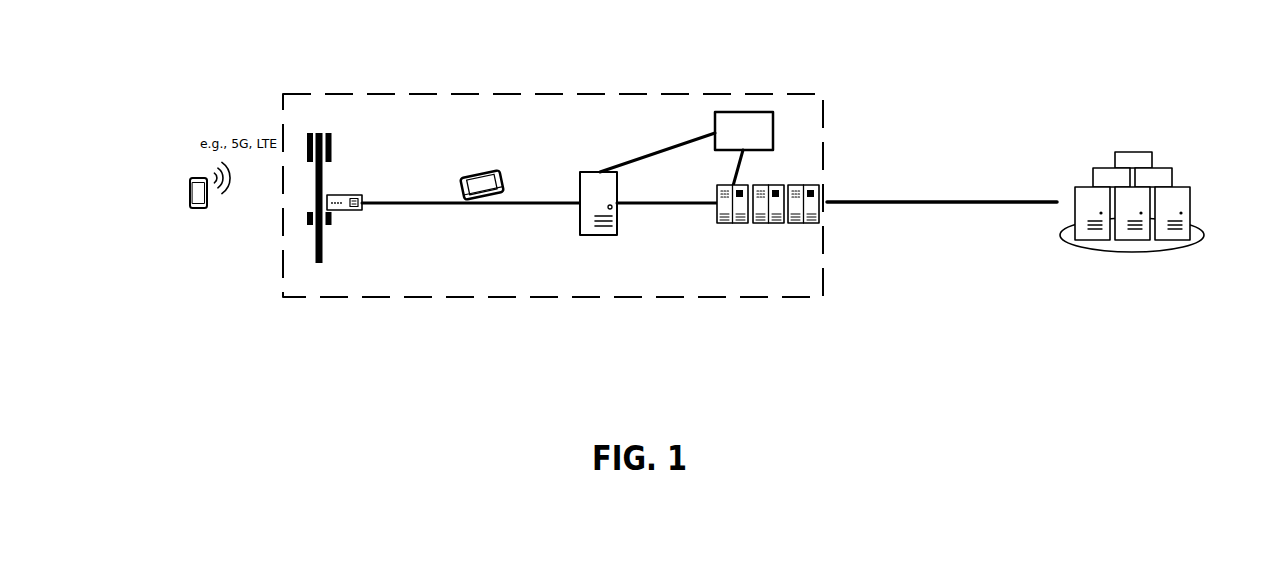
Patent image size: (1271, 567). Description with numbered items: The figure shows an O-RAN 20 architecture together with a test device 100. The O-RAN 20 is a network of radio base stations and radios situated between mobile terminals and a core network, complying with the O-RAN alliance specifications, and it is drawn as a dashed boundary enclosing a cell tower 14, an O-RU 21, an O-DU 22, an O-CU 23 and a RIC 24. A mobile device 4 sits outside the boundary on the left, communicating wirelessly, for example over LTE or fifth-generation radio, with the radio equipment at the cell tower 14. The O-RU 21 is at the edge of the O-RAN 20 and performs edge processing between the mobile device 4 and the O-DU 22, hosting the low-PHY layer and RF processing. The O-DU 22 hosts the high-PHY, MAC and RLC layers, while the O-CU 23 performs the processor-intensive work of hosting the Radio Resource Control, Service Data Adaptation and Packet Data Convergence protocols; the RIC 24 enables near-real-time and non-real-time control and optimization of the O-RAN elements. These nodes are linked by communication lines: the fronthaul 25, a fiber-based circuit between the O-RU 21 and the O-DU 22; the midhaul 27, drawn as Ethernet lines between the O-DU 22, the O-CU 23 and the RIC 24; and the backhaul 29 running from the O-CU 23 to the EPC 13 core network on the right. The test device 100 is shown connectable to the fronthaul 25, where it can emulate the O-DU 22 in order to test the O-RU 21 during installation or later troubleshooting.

The mobile device 4 is at (184, 179).
The EPC 13 is at (1125, 152).
The cell tower 14 is at (318, 258).
The O-RAN 20 is at (507, 95).
The O-RU 21 is at (345, 195).
The O-DU 22 is at (580, 190).
The O-CU 23 is at (787, 185).
The RIC 24 is at (747, 112).
The fronthaul 25 is at (471, 243).
The midhaul 27 is at (658, 183).
The backhaul 29 is at (942, 229).
The test device 100 is at (468, 172).